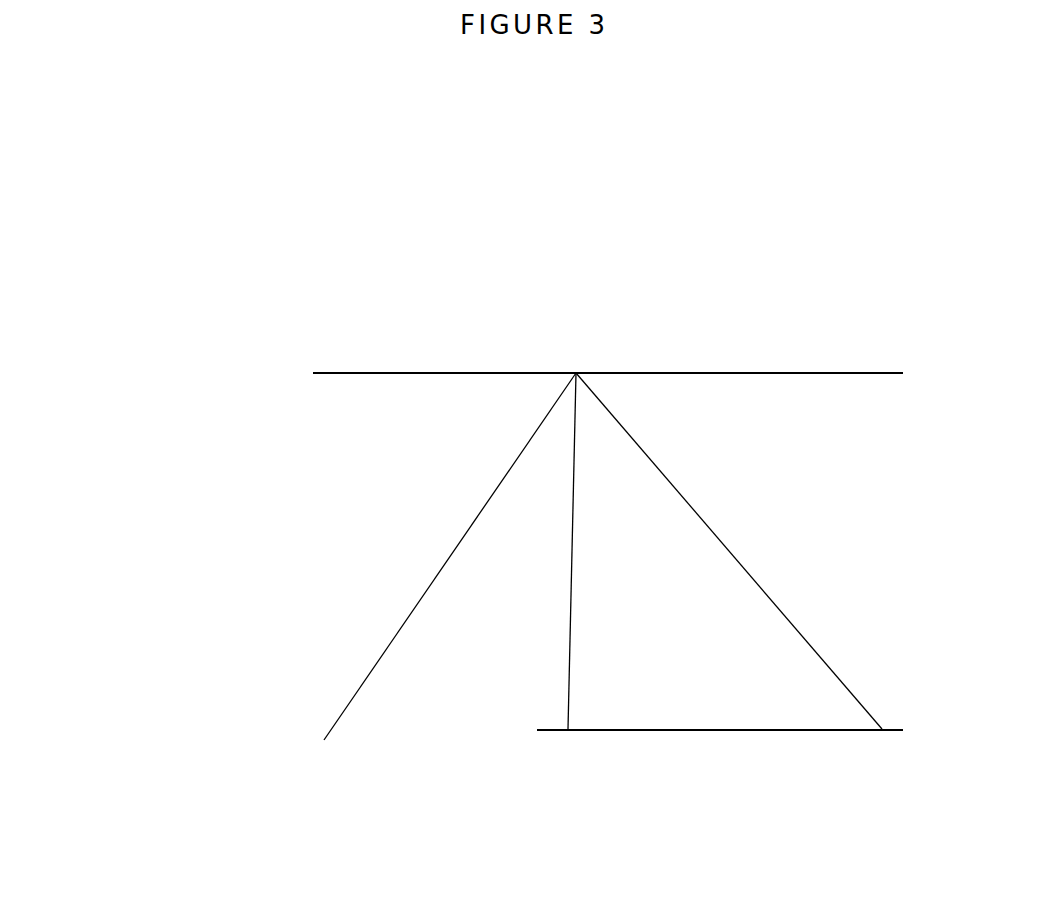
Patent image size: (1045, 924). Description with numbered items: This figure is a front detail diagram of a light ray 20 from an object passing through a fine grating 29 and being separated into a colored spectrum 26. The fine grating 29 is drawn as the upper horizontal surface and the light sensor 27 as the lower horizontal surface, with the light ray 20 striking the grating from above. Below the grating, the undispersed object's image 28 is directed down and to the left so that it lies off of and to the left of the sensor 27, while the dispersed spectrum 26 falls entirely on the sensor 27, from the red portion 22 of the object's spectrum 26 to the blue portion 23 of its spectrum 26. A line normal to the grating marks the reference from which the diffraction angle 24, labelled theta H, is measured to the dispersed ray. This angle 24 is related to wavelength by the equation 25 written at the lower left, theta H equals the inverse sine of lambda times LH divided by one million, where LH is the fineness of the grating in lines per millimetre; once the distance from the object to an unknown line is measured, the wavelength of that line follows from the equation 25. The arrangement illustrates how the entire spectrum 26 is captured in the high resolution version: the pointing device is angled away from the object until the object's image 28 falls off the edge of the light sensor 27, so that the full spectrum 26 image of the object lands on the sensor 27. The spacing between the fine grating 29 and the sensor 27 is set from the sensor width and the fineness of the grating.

The light ray 20 is at (582, 352).
The fine grating 29 is at (774, 370).
The object's image 28 is at (315, 730).
The red portion 22 is at (777, 602).
The blue portion 23 is at (571, 640).
The angle 24 is at (527, 520).
The equation 25 is at (123, 815).
The spectrum 26 is at (697, 693).
The light sensor 27 is at (788, 730).